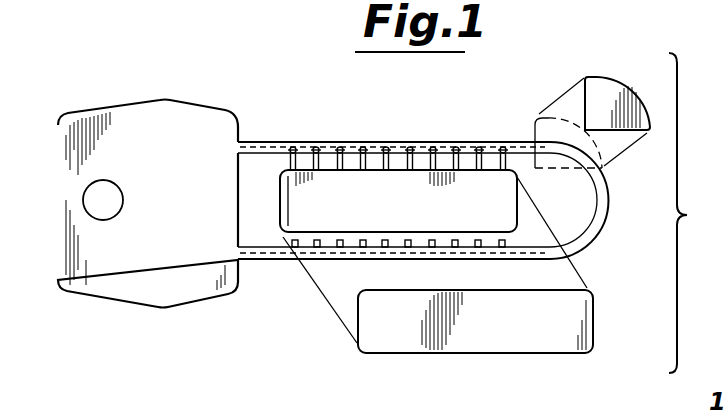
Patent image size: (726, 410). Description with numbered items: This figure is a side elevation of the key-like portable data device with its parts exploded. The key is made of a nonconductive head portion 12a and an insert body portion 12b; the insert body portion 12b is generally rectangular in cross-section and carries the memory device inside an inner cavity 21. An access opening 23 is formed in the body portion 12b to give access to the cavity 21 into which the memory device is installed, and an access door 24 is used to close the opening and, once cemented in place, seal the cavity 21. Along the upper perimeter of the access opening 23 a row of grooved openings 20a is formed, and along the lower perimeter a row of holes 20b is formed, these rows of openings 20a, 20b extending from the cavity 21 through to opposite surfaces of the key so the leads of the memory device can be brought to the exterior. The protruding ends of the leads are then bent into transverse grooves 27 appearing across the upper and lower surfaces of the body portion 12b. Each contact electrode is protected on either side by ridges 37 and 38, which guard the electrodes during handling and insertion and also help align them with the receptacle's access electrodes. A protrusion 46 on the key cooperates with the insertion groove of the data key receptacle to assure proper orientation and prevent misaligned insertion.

The head body portion 12a is at (137, 103).
The insert body portion 12b is at (258, 143).
The protective ridge 37 is at (289, 148).
The protective ridge 38 is at (299, 165).
The transverse grooves 27 is at (341, 142).
The access opening 23 is at (280, 205).
The grooved openings 20a is at (300, 173).
The holes 20b is at (452, 240).
The cavity 21 is at (382, 163).
The access door 24 is at (530, 343).
The protrusion 46 is at (598, 77).